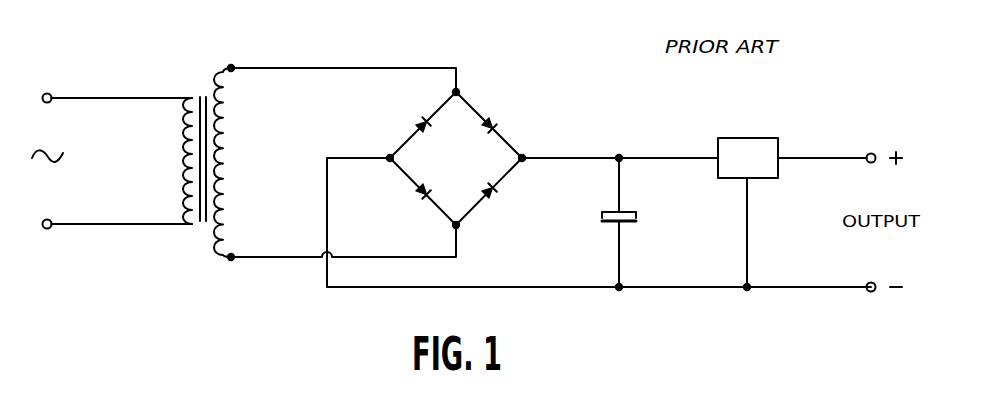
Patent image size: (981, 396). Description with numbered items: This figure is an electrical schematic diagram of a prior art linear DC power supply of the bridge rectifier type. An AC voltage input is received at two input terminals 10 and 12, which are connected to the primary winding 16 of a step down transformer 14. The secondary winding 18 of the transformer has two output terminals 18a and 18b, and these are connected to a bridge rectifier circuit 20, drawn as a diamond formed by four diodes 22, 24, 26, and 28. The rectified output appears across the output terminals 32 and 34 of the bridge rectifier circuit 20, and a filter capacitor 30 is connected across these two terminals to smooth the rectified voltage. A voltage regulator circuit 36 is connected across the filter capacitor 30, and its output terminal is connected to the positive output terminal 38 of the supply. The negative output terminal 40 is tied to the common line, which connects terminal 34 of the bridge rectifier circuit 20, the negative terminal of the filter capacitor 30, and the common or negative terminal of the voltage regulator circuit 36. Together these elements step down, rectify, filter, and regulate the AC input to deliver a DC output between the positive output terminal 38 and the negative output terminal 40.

The input terminal 10 is at (47, 93).
The input terminal 12 is at (50, 229).
The step down transformer 14 is at (200, 68).
The primary winding 16 is at (191, 96).
The secondary winding 18 is at (222, 66).
The output terminal of secondary winding 18a is at (233, 72).
The output terminal of secondary winding 18b is at (232, 254).
The bridge rectifier circuit 20 is at (503, 90).
The diode 22 is at (497, 124).
The diode 24 is at (418, 124).
The diode 26 is at (421, 196).
The diode 28 is at (488, 198).
The filter capacitor 30 is at (637, 215).
The output terminal of bridge rectifier circuit 32 is at (523, 155).
The output terminal of bridge rectifier circuit 34 is at (390, 155).
The voltage regulator circuit 36 is at (748, 137).
The positive output terminal 38 is at (871, 153).
The negative output terminal 40 is at (869, 292).